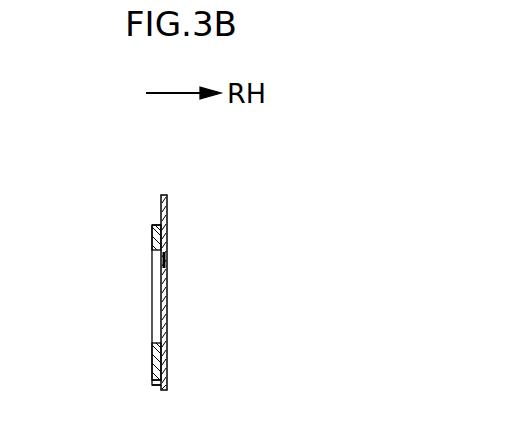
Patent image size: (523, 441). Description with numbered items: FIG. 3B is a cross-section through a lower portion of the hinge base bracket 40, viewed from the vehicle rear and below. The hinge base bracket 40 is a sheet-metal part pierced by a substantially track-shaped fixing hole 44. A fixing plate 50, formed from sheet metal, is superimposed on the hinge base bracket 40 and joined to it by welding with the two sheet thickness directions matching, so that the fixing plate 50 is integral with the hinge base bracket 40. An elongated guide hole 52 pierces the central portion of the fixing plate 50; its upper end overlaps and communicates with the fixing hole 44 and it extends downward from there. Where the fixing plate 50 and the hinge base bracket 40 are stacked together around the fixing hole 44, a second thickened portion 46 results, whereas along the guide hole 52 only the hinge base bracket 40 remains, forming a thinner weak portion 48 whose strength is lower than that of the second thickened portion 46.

The hinge base bracket 40 is at (168, 196).
The fixing hole 44 is at (167, 261).
The second thickened portion 46 is at (153, 238).
The weak portion 48 is at (156, 311).
The guide hole 52 is at (152, 353).
The fixing plate 50 is at (152, 380).